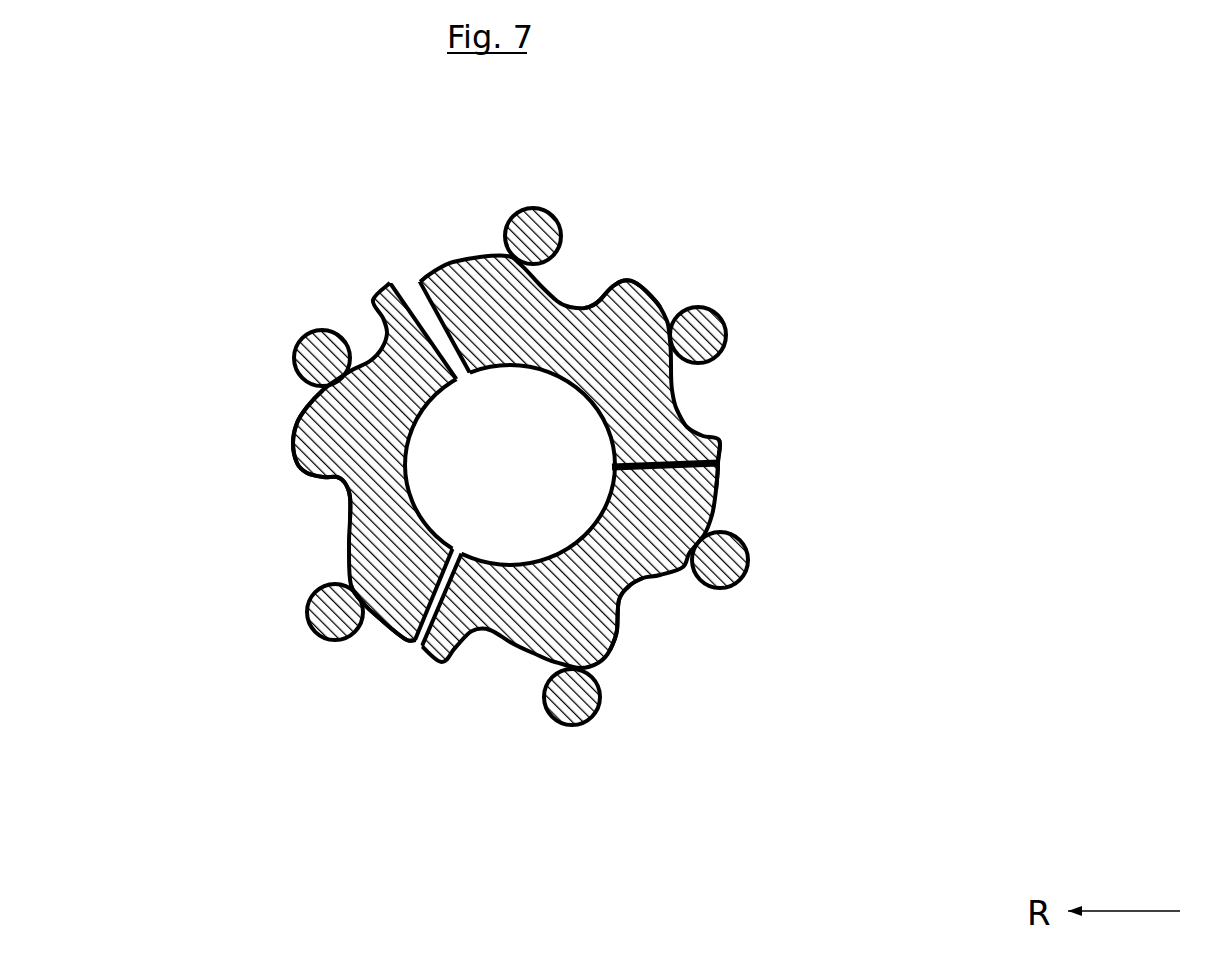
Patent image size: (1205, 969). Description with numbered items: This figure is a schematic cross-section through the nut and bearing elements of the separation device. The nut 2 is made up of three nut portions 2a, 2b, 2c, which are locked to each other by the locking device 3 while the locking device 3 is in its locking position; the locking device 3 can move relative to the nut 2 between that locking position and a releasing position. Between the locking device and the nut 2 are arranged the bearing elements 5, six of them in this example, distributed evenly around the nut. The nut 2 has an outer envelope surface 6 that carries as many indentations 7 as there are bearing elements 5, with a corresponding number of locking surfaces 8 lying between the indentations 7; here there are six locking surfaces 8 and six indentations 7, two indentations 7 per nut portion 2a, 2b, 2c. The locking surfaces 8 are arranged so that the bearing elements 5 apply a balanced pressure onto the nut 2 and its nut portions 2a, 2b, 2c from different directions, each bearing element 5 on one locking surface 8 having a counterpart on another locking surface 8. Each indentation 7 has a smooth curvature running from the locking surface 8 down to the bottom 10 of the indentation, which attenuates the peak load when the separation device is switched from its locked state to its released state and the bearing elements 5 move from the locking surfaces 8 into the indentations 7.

The nut 2 is at (647, 410).
The nut portion 2a is at (370, 390).
The nut portion 2b is at (603, 333).
The nut portion 2c is at (367, 448).
The locking device 3 is at (635, 537).
The bearing element 5 is at (600, 717).
The outer envelope surface 6 is at (387, 627).
The indentation 7 is at (350, 500).
The locking surface 8 is at (397, 640).
The bottom of the indentation 10 is at (623, 600).